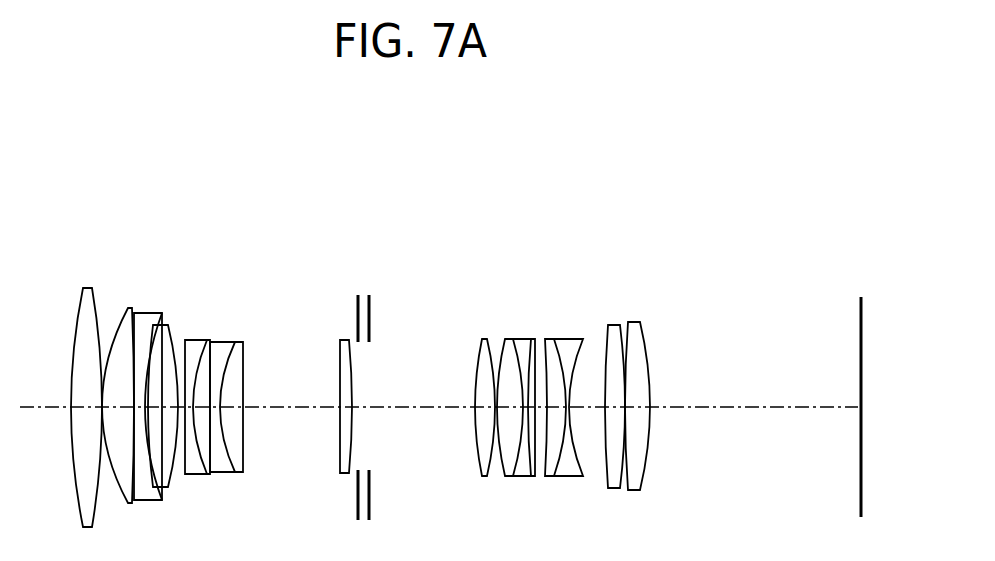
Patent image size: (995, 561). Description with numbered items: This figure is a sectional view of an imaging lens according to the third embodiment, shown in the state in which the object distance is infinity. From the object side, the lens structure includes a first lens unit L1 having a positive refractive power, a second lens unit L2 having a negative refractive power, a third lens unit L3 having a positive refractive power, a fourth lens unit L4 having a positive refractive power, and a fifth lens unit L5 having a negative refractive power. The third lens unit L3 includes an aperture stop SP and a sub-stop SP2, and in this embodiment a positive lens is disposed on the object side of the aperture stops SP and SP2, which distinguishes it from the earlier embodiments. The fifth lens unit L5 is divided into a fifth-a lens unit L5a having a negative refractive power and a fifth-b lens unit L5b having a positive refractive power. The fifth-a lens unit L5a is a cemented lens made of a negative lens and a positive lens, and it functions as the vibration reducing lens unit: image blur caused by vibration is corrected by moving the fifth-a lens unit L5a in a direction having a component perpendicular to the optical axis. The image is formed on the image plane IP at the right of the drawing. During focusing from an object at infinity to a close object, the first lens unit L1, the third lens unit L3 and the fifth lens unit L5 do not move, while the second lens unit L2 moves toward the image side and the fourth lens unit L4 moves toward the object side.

The first lens unit L1 is at (63, 235).
The second lens unit L2 is at (185, 235).
The third lens unit L3 is at (383, 235).
The fourth lens unit L4 is at (537, 235).
The fifth lens unit L5 is at (597, 294).
The fifth-a lens unit L5a is at (542, 235).
The fifth-b lens unit L5b is at (625, 334).
The aperture stop SP is at (356, 311).
The sub-stop SP2 is at (371, 311).
The image plane IP is at (861, 320).